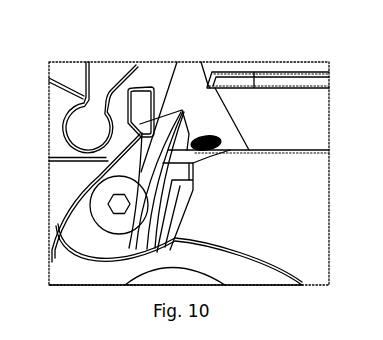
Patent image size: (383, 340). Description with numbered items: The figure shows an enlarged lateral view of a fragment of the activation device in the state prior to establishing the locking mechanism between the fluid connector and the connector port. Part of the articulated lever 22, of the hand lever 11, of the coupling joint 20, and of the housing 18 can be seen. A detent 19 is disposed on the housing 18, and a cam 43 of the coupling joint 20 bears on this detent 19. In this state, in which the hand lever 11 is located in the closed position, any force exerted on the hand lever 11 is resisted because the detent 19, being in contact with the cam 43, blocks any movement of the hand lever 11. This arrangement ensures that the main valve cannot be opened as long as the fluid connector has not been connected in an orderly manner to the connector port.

The hand lever 11 is at (239, 277).
The housing 18 is at (159, 79).
The detent 19 is at (182, 110).
The coupling joint 20 is at (62, 152).
The articulated lever 22 is at (100, 97).
The cam 43 is at (141, 135).